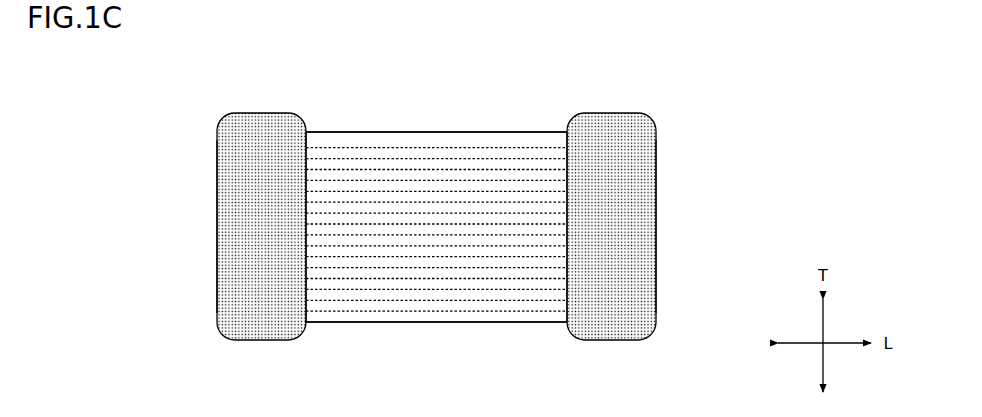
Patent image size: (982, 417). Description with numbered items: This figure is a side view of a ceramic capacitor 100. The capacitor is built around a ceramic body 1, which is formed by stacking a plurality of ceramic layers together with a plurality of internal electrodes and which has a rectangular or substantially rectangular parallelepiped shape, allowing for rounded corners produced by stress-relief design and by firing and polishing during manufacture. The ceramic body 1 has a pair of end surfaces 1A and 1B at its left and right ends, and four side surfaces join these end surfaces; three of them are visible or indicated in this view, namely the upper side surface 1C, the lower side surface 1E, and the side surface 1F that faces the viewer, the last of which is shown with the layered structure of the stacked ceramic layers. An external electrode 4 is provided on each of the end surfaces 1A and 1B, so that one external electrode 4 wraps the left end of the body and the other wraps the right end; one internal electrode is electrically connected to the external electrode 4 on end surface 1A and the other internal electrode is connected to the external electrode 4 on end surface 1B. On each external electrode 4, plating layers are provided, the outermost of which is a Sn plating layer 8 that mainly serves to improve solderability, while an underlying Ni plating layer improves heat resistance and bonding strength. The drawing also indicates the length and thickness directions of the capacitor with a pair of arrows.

The ceramic capacitor 100 is at (143, 98).
The ceramic body 1 is at (383, 133).
The end surface 1A is at (203, 227).
The end surface 1B is at (671, 222).
The side surface 1C is at (485, 128).
The side surface 1E is at (437, 325).
The side surface 1F is at (427, 236).
The external electrode 4 is at (262, 106).
The Sn plating layer 8 is at (243, 303).